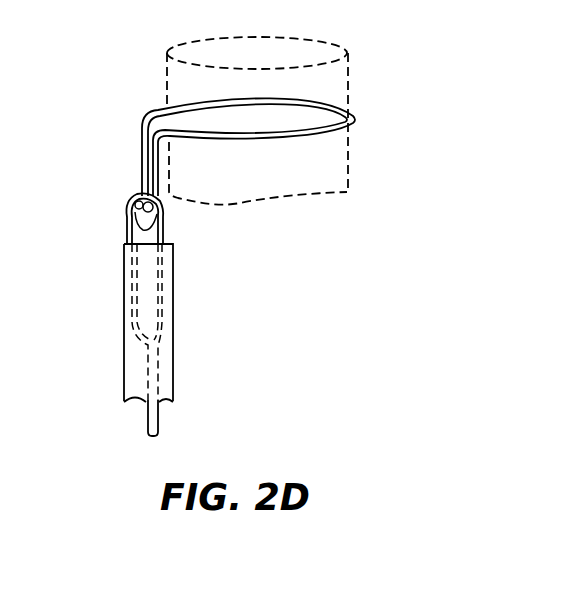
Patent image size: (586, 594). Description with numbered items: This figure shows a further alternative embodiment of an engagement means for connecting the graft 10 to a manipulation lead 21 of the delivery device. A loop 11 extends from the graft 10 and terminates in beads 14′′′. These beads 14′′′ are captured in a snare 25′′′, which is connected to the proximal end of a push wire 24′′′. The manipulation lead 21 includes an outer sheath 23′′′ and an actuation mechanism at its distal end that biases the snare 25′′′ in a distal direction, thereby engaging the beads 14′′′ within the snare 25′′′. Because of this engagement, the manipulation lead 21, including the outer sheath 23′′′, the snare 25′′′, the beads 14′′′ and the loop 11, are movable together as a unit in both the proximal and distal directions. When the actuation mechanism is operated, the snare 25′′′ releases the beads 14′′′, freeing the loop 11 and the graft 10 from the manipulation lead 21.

The graft 10 is at (249, 182).
The loop 11 is at (355, 119).
The manipulation lead 21 is at (108, 392).
The snare 25′′′ is at (122, 205).
The beads 14′′′ is at (163, 228).
The outer sheath 23′′′ is at (173, 322).
The push wire 24′′′ is at (160, 423).